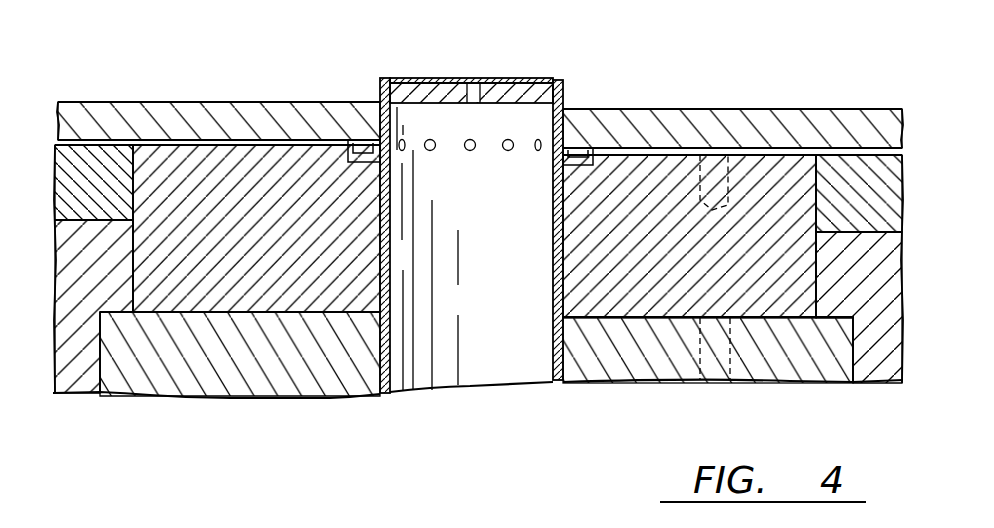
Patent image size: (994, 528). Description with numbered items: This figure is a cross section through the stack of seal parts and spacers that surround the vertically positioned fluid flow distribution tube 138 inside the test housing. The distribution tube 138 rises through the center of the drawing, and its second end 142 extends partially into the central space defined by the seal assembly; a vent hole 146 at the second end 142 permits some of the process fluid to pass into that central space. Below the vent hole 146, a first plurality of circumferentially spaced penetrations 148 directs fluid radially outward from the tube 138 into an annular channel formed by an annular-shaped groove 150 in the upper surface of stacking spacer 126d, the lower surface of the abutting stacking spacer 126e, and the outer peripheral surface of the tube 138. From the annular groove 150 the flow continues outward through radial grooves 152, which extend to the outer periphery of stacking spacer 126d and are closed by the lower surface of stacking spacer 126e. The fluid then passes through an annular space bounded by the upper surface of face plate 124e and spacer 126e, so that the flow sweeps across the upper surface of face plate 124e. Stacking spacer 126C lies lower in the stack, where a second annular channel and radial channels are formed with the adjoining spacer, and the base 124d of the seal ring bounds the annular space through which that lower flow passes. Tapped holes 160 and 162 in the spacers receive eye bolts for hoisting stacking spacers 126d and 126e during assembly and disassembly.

The face plate 124e is at (53, 150).
The stacking spacer 126e is at (163, 110).
The radial grooves 152 is at (250, 145).
The vent hole 146 is at (473, 92).
The second end 142 is at (563, 92).
The annular-shaped groove 150 is at (565, 152).
The tapped hole 160 is at (720, 165).
The first plurality of circumferentially spaced penetrations 148 is at (430, 151).
The fluid flow distribution tube 138 is at (552, 293).
The tapped hole 162 is at (715, 377).
The stacking spacer 126C is at (810, 363).
The stacking spacer 126d is at (197, 298).
The base 124d is at (85, 378).